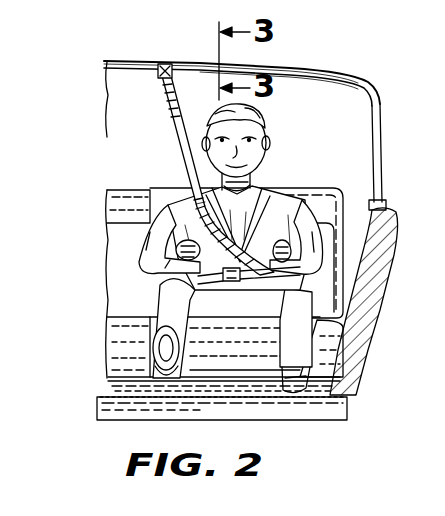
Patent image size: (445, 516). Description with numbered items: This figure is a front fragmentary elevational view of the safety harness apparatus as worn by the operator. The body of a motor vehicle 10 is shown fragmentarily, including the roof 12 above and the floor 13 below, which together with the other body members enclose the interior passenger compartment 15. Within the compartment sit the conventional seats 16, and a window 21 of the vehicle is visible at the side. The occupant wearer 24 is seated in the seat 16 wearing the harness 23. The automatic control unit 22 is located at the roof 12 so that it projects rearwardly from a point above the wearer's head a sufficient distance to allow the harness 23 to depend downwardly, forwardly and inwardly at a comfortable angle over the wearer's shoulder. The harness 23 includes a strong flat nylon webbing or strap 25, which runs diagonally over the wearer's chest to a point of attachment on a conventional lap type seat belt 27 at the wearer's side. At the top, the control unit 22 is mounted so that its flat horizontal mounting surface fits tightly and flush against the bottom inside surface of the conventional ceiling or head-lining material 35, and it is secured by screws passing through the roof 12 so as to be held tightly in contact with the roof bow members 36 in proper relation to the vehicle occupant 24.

The body of a motor vehicle 10 is at (378, 343).
The roof 12 is at (313, 69).
The floor 13 is at (120, 378).
The interior passenger compartment 15 is at (326, 155).
The seats 16 is at (122, 322).
The windows 21 is at (381, 150).
The automatic control unit 22 is at (153, 81).
The harness or strap 23 is at (173, 143).
The occupant wearer 24 is at (283, 208).
The flat nylon webbing or strap 25 is at (200, 217).
The lap type seat belt 27 is at (222, 277).
The ceiling or head-lining material 35 is at (285, 77).
The roof bow members 36 is at (258, 65).